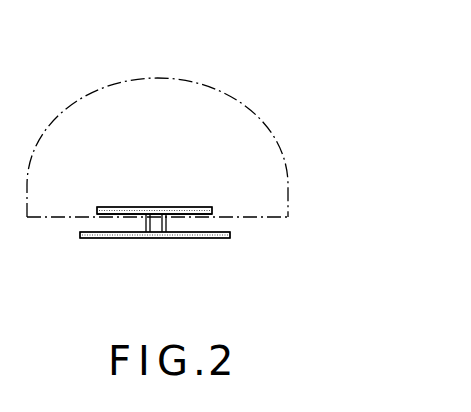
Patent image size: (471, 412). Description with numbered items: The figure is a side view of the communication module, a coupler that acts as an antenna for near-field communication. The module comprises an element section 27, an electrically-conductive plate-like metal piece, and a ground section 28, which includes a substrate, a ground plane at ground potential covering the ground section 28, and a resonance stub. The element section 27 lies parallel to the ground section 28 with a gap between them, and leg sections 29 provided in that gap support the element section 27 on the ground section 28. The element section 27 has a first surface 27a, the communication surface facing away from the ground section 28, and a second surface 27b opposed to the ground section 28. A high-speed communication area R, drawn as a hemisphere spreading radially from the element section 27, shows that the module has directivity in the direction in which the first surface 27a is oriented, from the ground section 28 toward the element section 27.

The high-speed communication area R is at (220, 90).
The element section 27 is at (155, 206).
The first surface 27a is at (195, 207).
The second surface 27b is at (198, 215).
The ground section 28 is at (199, 238).
The leg sections 29 is at (145, 227).